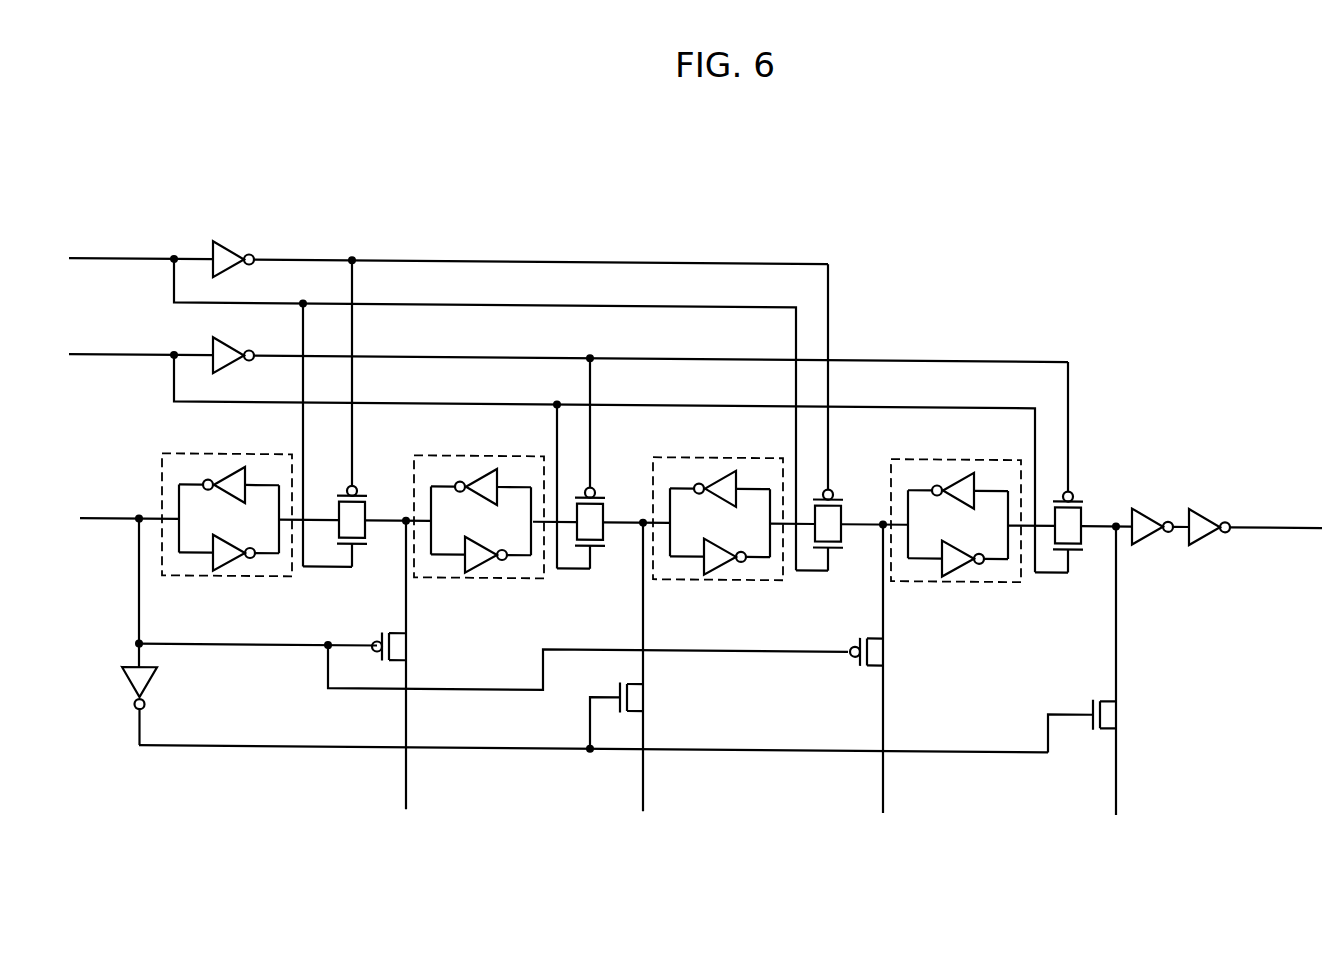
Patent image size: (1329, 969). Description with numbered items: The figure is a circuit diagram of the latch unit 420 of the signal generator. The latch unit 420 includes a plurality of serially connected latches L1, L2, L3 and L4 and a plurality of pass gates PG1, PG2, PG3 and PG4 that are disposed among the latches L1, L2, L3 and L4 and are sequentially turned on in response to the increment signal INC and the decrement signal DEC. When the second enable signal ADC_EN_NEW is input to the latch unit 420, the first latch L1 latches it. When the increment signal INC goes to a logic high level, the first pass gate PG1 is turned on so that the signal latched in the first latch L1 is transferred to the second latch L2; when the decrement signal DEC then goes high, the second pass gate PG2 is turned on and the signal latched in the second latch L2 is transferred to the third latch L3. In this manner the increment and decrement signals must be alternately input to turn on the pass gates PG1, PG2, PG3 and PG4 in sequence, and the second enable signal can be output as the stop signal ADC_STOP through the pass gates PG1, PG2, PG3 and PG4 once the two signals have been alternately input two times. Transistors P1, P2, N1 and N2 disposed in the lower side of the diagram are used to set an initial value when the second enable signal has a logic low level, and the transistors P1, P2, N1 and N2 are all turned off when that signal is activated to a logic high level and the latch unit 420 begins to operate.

The latch unit 420 is at (1101, 243).
The first latch L1 is at (227, 525).
The second latch L2 is at (479, 527).
The third latch L3 is at (718, 529).
The fourth latch L4 is at (956, 531).
The first pass gate PG1 is at (347, 530).
The second pass gate PG2 is at (593, 532).
The third pass gate PG3 is at (831, 534).
The fourth pass gate PG4 is at (1071, 536).
The transistor P1 is at (402, 646).
The transistor P2 is at (878, 652).
The transistor N1 is at (629, 715).
The transistor N2 is at (1095, 726).